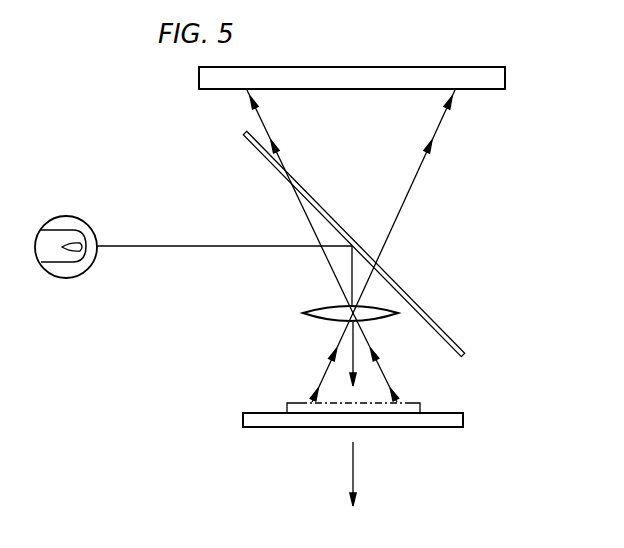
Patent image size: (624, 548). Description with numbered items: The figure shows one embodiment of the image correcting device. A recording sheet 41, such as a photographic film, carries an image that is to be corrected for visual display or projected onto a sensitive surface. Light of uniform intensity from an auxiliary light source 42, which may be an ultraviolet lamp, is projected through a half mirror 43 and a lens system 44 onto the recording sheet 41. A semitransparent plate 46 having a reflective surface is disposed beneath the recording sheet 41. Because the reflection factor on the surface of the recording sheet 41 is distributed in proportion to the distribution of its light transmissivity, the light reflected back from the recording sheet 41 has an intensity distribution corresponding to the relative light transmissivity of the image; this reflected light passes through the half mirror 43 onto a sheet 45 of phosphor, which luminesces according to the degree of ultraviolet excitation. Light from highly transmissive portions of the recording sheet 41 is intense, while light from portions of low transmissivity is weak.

The recording sheet 41 is at (300, 405).
The auxiliary light source 42 is at (92, 266).
The half mirror 43 is at (463, 348).
The lens system 44 is at (310, 318).
The sheet of phosphor 45 is at (505, 85).
The semitransparent plate 46 is at (463, 421).